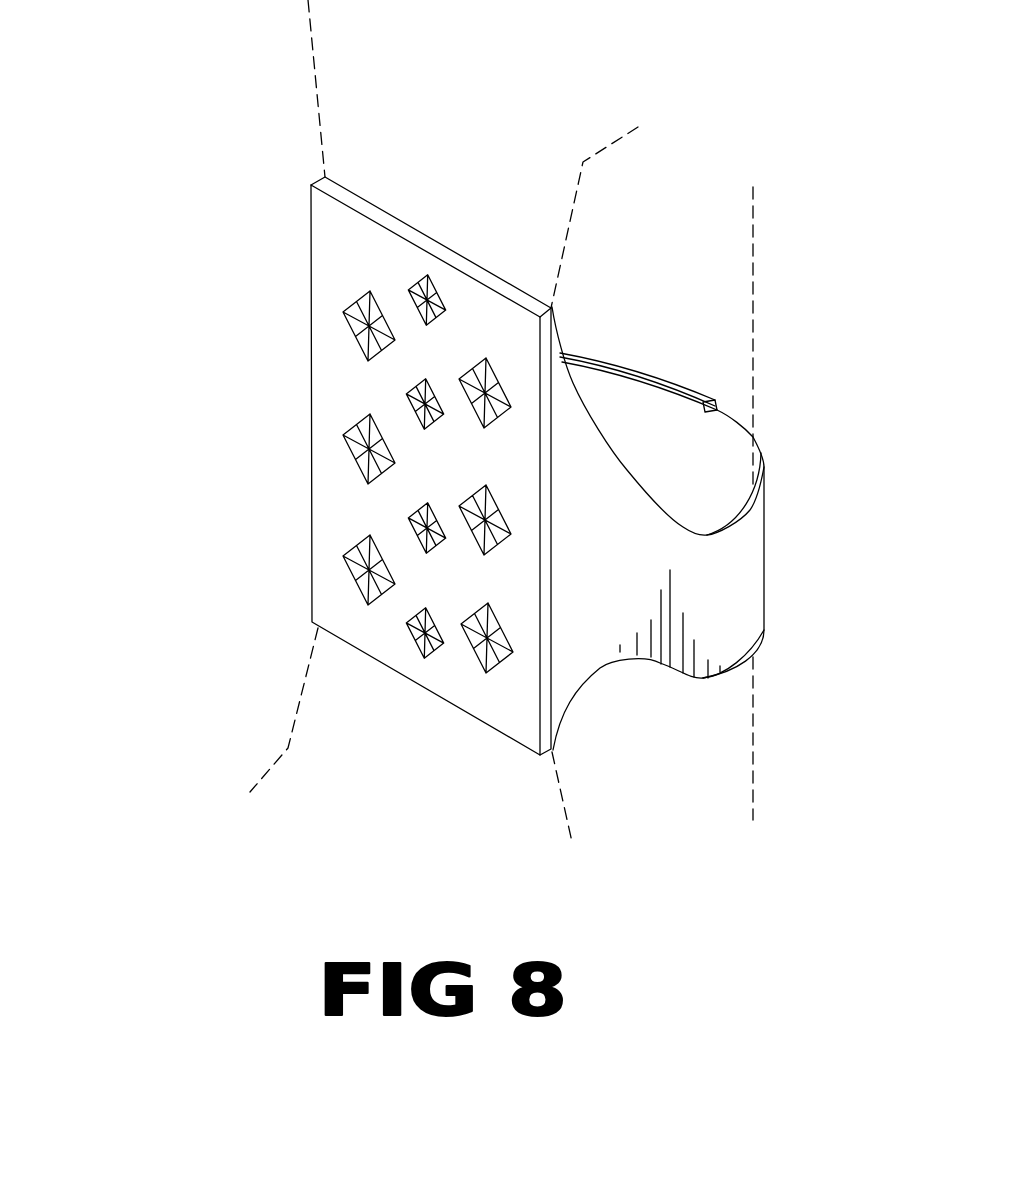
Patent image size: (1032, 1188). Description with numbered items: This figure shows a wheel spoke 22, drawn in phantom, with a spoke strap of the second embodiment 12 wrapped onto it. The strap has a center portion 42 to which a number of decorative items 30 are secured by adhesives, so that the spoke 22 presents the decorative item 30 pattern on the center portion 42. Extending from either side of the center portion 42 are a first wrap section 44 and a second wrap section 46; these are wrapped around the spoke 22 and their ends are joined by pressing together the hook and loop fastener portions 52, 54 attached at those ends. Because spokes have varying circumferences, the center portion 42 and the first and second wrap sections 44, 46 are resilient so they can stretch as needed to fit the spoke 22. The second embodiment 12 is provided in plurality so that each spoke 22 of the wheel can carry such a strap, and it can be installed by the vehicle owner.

The second embodiment 12 is at (490, 421).
The spoke 22 is at (318, 92).
The decorative item 30 is at (410, 517).
The center portion 42 is at (312, 348).
The first wrap section 44 is at (721, 260).
The second wrap section 46 is at (763, 546).
The hook and loop fastener portion 52 is at (789, 260).
The hook and loop fastener portion 54 is at (697, 392).